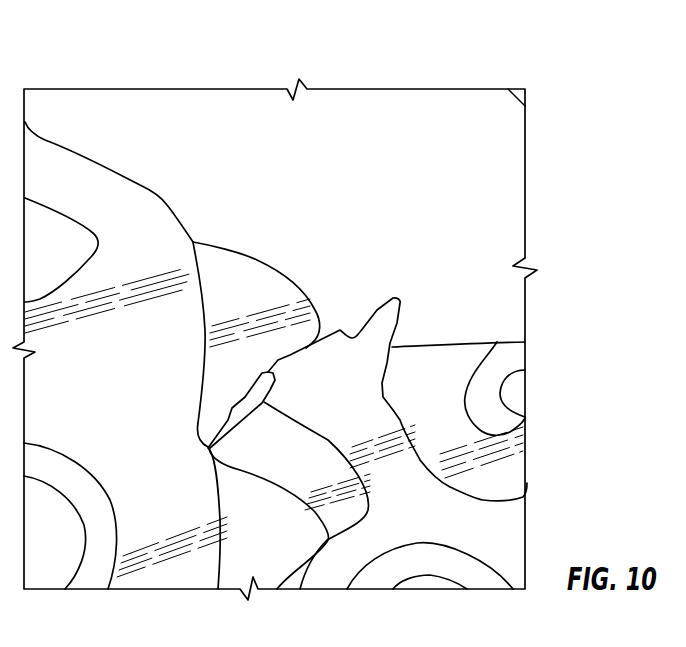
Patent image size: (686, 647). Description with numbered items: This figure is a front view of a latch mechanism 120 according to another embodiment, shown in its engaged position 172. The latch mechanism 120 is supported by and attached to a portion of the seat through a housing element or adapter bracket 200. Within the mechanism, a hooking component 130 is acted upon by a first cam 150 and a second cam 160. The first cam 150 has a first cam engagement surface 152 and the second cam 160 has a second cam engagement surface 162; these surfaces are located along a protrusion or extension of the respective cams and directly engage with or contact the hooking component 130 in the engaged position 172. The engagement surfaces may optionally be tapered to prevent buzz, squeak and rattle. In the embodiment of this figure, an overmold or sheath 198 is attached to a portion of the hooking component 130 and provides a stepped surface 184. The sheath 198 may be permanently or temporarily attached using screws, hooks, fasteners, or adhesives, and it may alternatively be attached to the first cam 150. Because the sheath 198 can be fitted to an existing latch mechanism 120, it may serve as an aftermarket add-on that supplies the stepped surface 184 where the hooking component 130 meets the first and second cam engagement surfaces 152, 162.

The latch mechanism 120 is at (469, 73).
The hooking component 130 is at (147, 592).
The first cam 150 is at (529, 466).
The first cam engagement surface 152 is at (328, 440).
The second cam 160 is at (529, 556).
The second cam engagement surface 162 is at (356, 338).
The engaged position 172 is at (379, 63).
The stepped surface 184 is at (229, 412).
The sheath 198 is at (245, 287).
The adapter bracket 200 is at (213, 122).